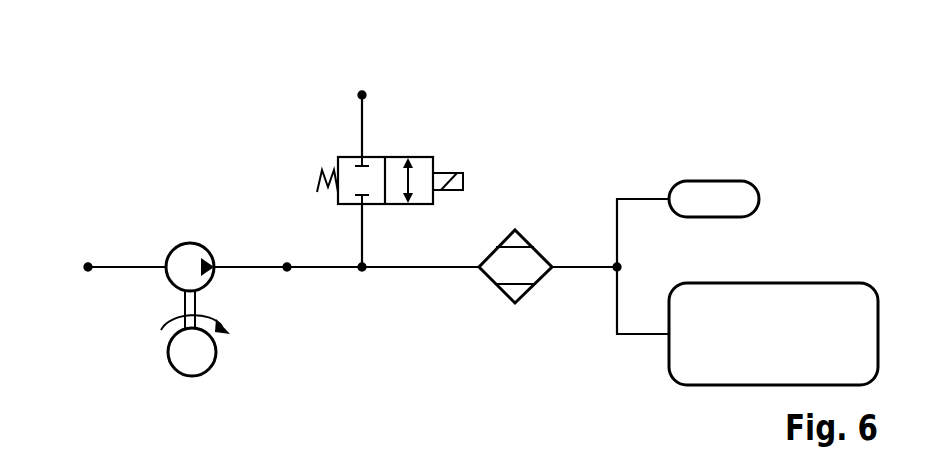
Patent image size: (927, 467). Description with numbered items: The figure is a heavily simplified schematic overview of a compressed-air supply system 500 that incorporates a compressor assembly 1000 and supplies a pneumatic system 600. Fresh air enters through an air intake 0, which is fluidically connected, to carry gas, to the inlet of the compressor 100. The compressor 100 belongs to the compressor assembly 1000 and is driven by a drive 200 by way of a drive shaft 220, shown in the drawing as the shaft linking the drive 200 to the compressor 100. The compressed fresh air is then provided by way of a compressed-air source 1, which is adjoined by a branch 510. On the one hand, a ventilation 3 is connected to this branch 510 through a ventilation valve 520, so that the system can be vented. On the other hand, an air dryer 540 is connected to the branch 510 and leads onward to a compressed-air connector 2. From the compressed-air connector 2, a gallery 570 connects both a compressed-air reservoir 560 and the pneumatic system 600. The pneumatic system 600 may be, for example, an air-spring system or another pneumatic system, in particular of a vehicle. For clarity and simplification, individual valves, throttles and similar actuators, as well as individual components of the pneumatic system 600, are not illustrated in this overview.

The air intake 0 is at (88, 262).
The compressed-air source 1 is at (286, 262).
The compressed-air connector 2 is at (615, 262).
The ventilation 3 is at (362, 91).
The compressor 100 is at (188, 242).
The drive 200 is at (193, 377).
The drive shaft 220 is at (183, 297).
The compressed-air supply system 500 is at (232, 82).
The branch 510 is at (362, 290).
The ventilation valve 520 is at (398, 155).
The air dryer 540 is at (517, 230).
The compressed-air reservoir 560 is at (716, 180).
The gallery 570 is at (617, 232).
The pneumatic system 600 is at (813, 282).
The compressor assembly 1000 is at (124, 362).